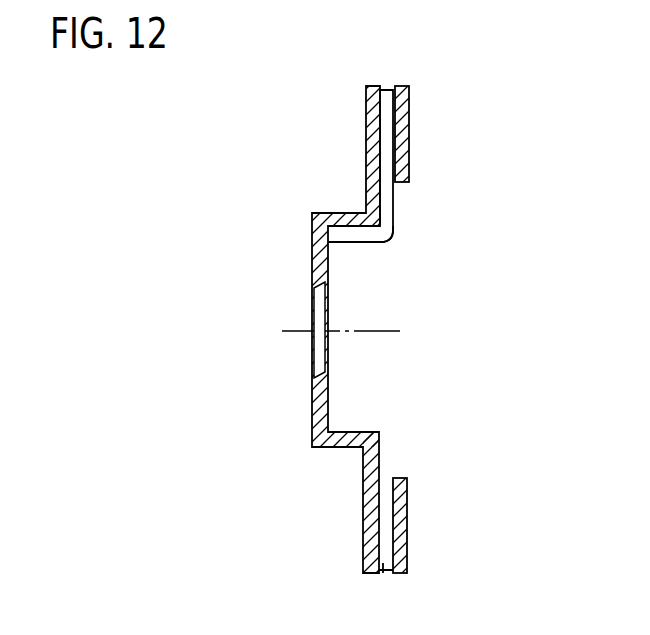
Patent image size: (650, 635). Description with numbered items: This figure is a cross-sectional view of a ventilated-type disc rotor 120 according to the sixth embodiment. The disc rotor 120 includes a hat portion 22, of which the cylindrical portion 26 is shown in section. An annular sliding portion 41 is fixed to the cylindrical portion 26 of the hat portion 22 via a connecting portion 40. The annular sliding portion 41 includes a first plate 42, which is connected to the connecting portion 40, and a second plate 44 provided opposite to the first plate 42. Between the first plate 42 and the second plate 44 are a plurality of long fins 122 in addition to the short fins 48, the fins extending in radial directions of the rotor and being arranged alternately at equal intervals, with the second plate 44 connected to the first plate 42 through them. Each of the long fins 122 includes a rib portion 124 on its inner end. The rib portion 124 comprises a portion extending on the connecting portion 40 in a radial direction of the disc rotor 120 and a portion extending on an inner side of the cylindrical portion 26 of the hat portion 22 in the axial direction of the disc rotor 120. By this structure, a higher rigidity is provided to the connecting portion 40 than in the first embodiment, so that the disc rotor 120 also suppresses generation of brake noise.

The hat portion 22 is at (304, 265).
The cylindrical portion 26 is at (336, 217).
The connecting portion 40 is at (378, 206).
The annular sliding portion 41 is at (414, 511).
The first plate 42 is at (367, 123).
The second plate 44 is at (409, 120).
The short fins 48 is at (388, 572).
The disc rotor 120 is at (451, 134).
The long fins 122 is at (387, 92).
The rib portion 124 is at (379, 234).